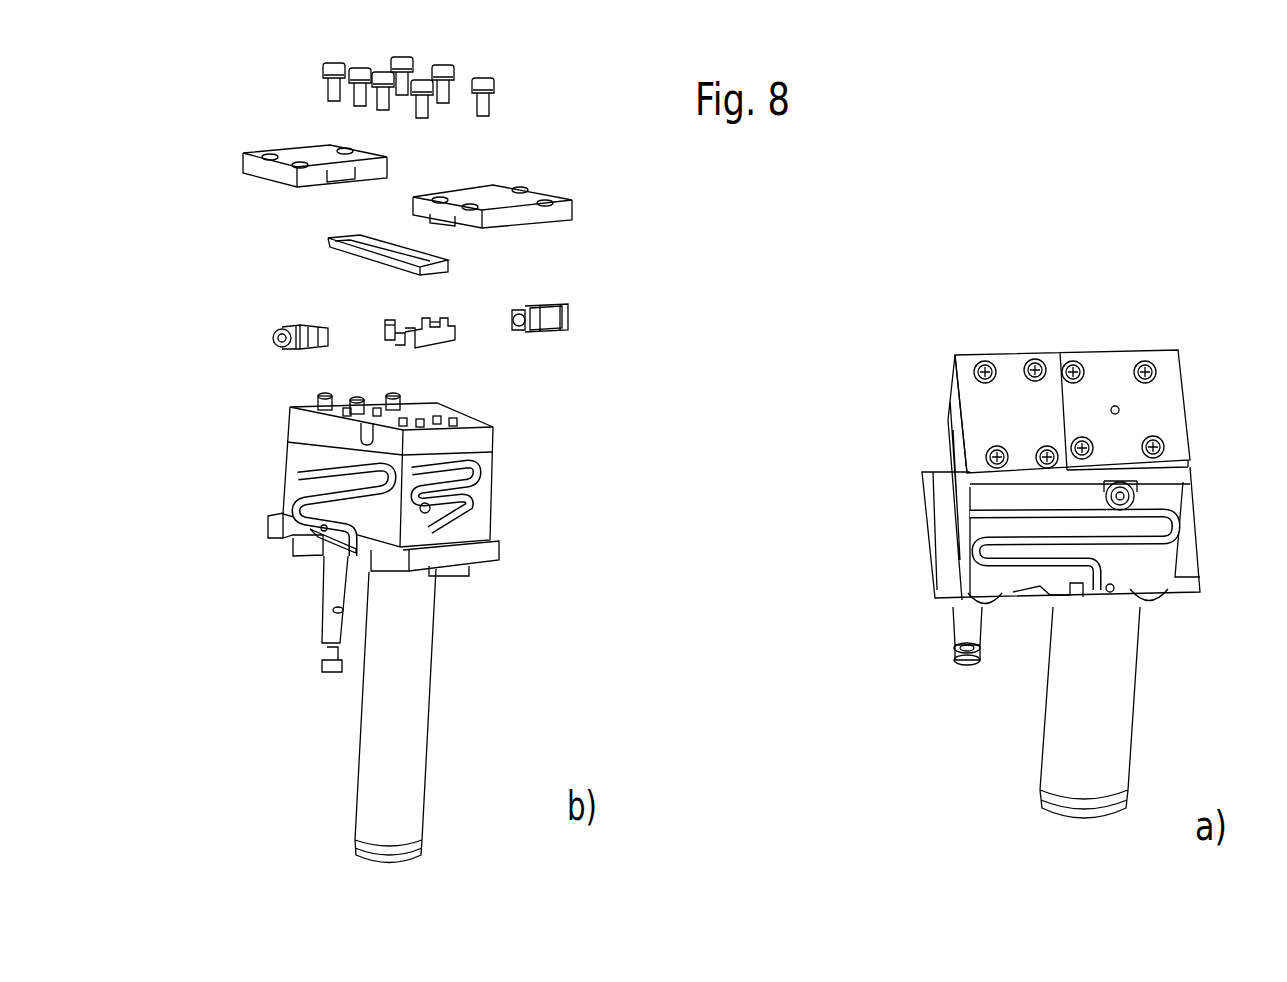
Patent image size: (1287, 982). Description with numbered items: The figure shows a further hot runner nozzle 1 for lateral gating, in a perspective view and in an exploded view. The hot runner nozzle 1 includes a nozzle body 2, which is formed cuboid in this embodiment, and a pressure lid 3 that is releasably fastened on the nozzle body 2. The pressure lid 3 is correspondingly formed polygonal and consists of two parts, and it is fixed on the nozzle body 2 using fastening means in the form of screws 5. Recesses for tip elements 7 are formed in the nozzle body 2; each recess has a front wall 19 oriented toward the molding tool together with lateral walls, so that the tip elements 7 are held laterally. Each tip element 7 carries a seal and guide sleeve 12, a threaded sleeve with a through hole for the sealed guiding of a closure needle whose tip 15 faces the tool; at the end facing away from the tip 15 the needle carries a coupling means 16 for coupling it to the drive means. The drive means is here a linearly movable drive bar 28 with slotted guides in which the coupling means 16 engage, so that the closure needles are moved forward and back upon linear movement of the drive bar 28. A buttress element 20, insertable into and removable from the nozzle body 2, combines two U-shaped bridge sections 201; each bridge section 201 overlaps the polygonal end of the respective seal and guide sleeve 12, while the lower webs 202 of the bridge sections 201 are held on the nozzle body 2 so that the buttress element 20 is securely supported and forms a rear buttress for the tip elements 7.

The hot runner nozzle 1 is at (518, 442).
The nozzle body 2 is at (490, 509).
The pressure lid 3 is at (573, 207).
The screws 5 is at (488, 104).
The tip elements 7 is at (305, 352).
The seal and guide sleeve 12 is at (523, 335).
The tip 15 is at (275, 340).
The coupling means 16 is at (323, 330).
The front wall 19 is at (368, 440).
The buttress element 20 is at (401, 339).
The drive bar 28 is at (333, 244).
The bridge section 201 is at (445, 316).
The lower webs 202 is at (386, 333).